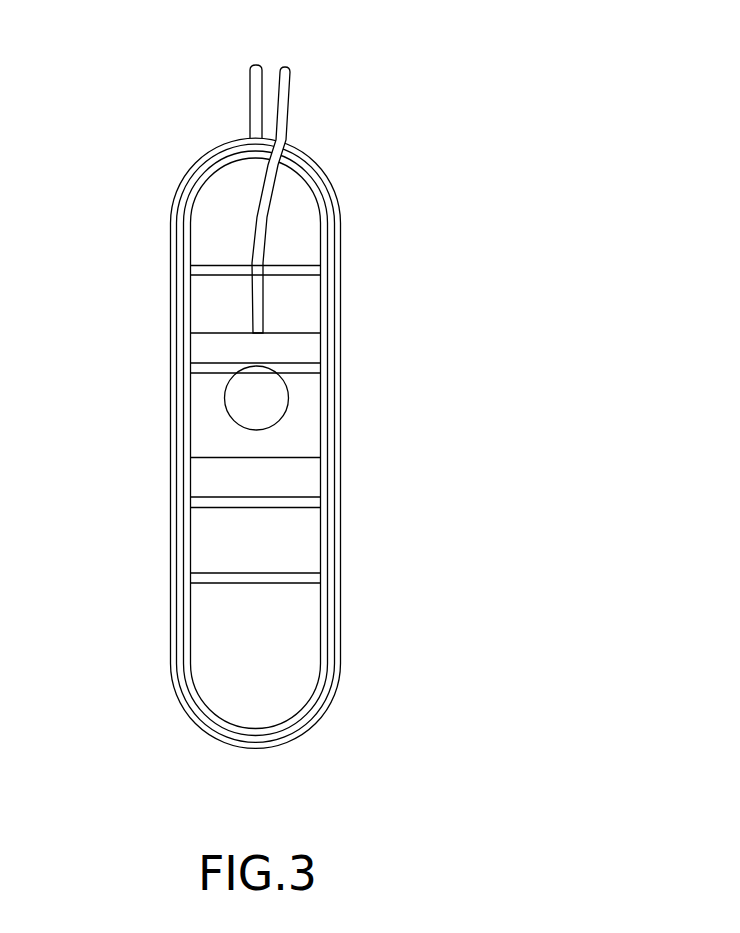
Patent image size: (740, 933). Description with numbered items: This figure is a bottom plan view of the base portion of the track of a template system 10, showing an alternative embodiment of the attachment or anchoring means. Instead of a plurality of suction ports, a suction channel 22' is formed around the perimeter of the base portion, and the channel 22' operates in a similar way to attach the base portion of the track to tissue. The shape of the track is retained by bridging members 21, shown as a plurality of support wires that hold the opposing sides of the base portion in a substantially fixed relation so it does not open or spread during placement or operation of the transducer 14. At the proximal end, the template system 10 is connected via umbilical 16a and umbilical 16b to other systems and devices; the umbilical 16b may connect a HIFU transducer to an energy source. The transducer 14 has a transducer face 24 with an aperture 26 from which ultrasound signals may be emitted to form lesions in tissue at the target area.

The template system 10 is at (100, 254).
The transducer 14 is at (310, 347).
The umbilical 16a is at (250, 81).
The umbilical 16b is at (292, 84).
The bridging members 21 is at (303, 508).
The suction channel 22' is at (306, 443).
The transducer face 24 is at (306, 449).
The aperture 26 is at (268, 398).